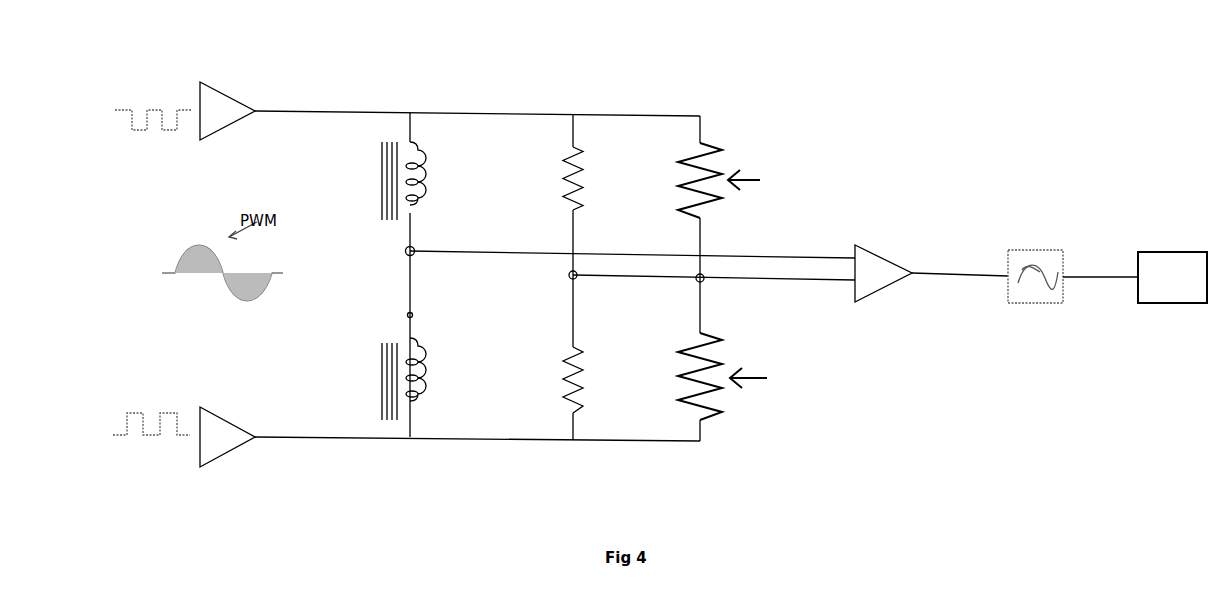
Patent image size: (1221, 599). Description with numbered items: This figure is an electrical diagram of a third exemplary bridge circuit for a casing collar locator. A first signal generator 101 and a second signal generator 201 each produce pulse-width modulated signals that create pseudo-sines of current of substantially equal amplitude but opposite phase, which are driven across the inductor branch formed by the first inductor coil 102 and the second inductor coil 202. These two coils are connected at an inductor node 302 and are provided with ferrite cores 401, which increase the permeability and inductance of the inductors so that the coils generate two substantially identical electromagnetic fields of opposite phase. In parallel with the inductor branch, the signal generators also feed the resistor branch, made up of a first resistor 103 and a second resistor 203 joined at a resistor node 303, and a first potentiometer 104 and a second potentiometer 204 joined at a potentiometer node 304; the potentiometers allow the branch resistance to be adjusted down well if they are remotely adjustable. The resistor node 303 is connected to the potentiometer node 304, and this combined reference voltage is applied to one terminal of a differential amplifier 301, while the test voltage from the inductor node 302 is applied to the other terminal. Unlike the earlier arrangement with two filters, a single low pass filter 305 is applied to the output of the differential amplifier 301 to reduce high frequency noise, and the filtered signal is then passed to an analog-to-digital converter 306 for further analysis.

The first signal generator 101 is at (185, 93).
The first inductor coil 102 is at (439, 164).
The first resistor 103 is at (596, 166).
The first potentiometer 104 is at (719, 176).
The second signal generator 201 is at (184, 454).
The second inductor coil 202 is at (431, 377).
The second resistor 203 is at (594, 382).
The second potentiometer 204 is at (722, 377).
The differential amplifier 301 is at (931, 250).
The inductor node 302 is at (604, 255).
The resistor node 303 is at (683, 275).
The potentiometer node 304 is at (718, 288).
The low pass filter 305 is at (1073, 250).
The analog-to-digital converter 306 is at (1172, 250).
The ferrite cores 401 is at (362, 281).